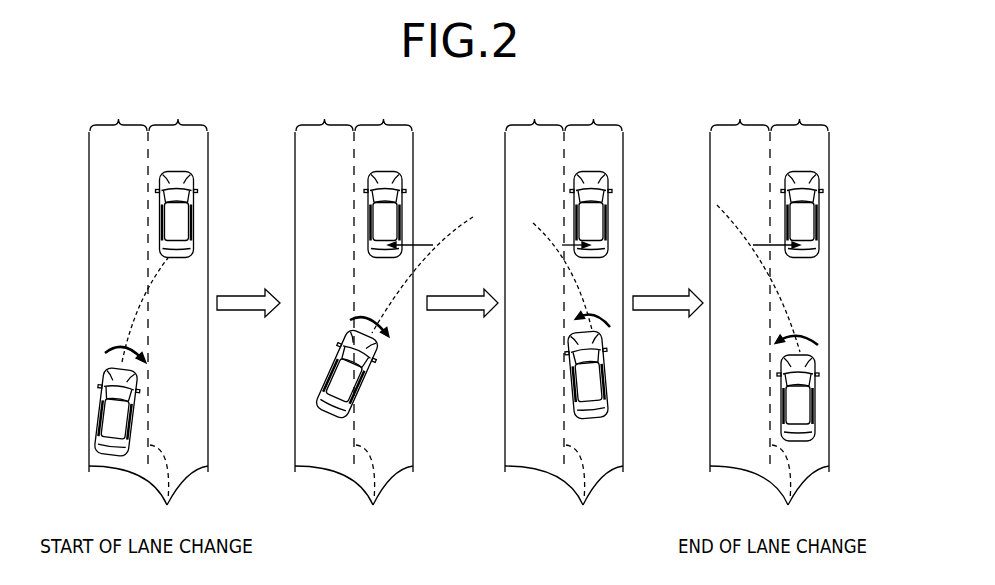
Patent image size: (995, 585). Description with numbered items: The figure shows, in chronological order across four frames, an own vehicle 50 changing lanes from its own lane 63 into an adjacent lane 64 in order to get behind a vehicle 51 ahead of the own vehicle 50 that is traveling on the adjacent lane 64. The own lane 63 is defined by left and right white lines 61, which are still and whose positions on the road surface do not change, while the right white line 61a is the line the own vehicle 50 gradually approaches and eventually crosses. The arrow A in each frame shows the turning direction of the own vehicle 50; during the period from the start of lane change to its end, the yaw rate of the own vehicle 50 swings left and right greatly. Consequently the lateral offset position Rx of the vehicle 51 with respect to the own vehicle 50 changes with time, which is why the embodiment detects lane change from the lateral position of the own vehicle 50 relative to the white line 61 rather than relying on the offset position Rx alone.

The own vehicle 50 is at (107, 425).
The vehicle ahead of the own vehicle 51 is at (195, 204).
The white line 61 is at (459, 332).
The right white line 61a is at (150, 422).
The own lane 63 is at (429, 114).
The adjacent lane 64 is at (488, 114).
The lateral offset position Rx is at (424, 245).
The arrow A is at (113, 347).